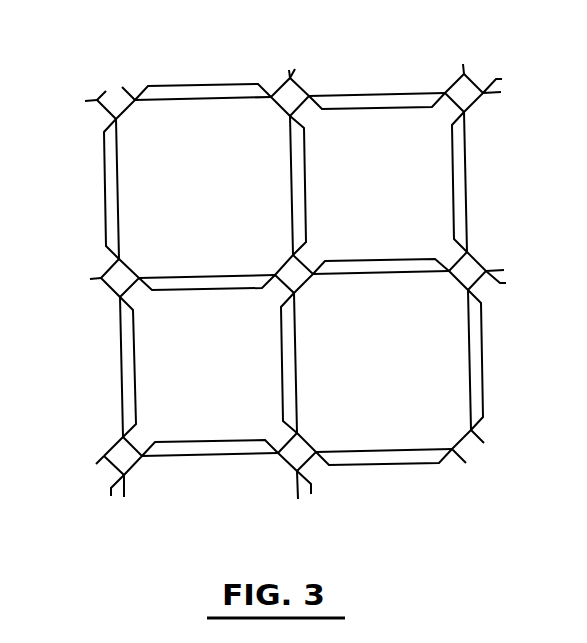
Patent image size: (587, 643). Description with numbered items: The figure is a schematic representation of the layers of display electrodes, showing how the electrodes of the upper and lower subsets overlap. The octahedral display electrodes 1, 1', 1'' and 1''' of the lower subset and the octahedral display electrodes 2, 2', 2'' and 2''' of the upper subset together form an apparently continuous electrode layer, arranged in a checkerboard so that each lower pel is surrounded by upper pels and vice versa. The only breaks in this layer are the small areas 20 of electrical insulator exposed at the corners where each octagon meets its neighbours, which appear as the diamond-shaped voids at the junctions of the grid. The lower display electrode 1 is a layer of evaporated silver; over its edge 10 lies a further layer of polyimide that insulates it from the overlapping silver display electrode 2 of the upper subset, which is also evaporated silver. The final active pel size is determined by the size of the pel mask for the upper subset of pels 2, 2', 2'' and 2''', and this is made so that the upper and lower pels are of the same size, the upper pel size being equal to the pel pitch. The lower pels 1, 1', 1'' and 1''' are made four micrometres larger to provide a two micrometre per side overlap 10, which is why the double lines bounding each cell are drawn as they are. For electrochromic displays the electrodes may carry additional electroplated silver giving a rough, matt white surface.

The octahedral display electrode 1 is at (204, 138).
The octahedral display electrode 1' is at (419, 361).
The octahedral display electrode 1'' is at (376, 54).
The octahedral display electrode 1''' is at (211, 499).
The octahedral display electrode 2 is at (378, 144).
The octahedral display electrode 2' is at (172, 365).
The octahedral display electrode 2'' is at (178, 56).
The octahedral display electrode 2''' is at (374, 486).
The edge 10 is at (275, 355).
The small areas of electrical insulator 20 is at (120, 470).